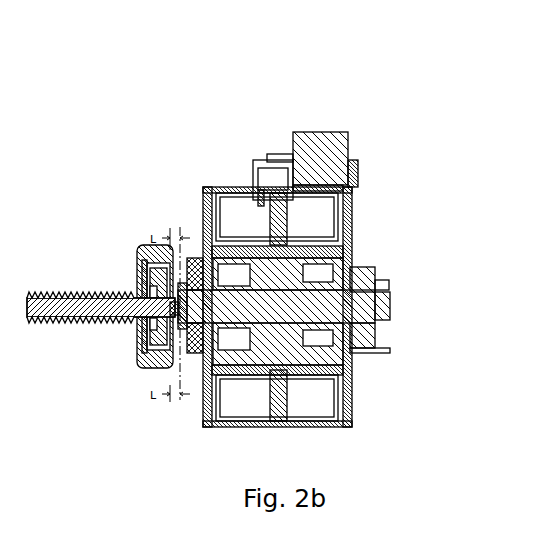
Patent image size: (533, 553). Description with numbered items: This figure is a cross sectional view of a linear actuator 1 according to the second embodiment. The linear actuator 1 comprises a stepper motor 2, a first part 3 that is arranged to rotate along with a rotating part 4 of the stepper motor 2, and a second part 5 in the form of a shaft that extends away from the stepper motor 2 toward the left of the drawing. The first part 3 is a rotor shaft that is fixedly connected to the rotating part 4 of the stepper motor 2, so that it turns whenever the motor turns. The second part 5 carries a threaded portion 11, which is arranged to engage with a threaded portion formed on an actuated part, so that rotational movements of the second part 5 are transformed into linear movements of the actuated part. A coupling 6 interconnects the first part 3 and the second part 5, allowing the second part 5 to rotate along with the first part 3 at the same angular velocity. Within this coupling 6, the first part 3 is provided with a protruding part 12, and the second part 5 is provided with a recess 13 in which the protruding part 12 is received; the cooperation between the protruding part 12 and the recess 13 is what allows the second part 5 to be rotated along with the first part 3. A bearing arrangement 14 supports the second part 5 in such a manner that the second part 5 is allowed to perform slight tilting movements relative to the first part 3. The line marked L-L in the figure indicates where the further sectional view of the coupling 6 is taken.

The linear actuator 1 is at (293, 108).
The stepper motor 2 is at (247, 398).
The first part 3 is at (316, 300).
The rotating part 4 is at (295, 346).
The second part 5 is at (147, 307).
The coupling 6 is at (183, 327).
The threaded portion 11 is at (88, 321).
The protruding part 12 is at (181, 298).
The recess 13 is at (175, 303).
The bearing arrangement 14 is at (155, 268).